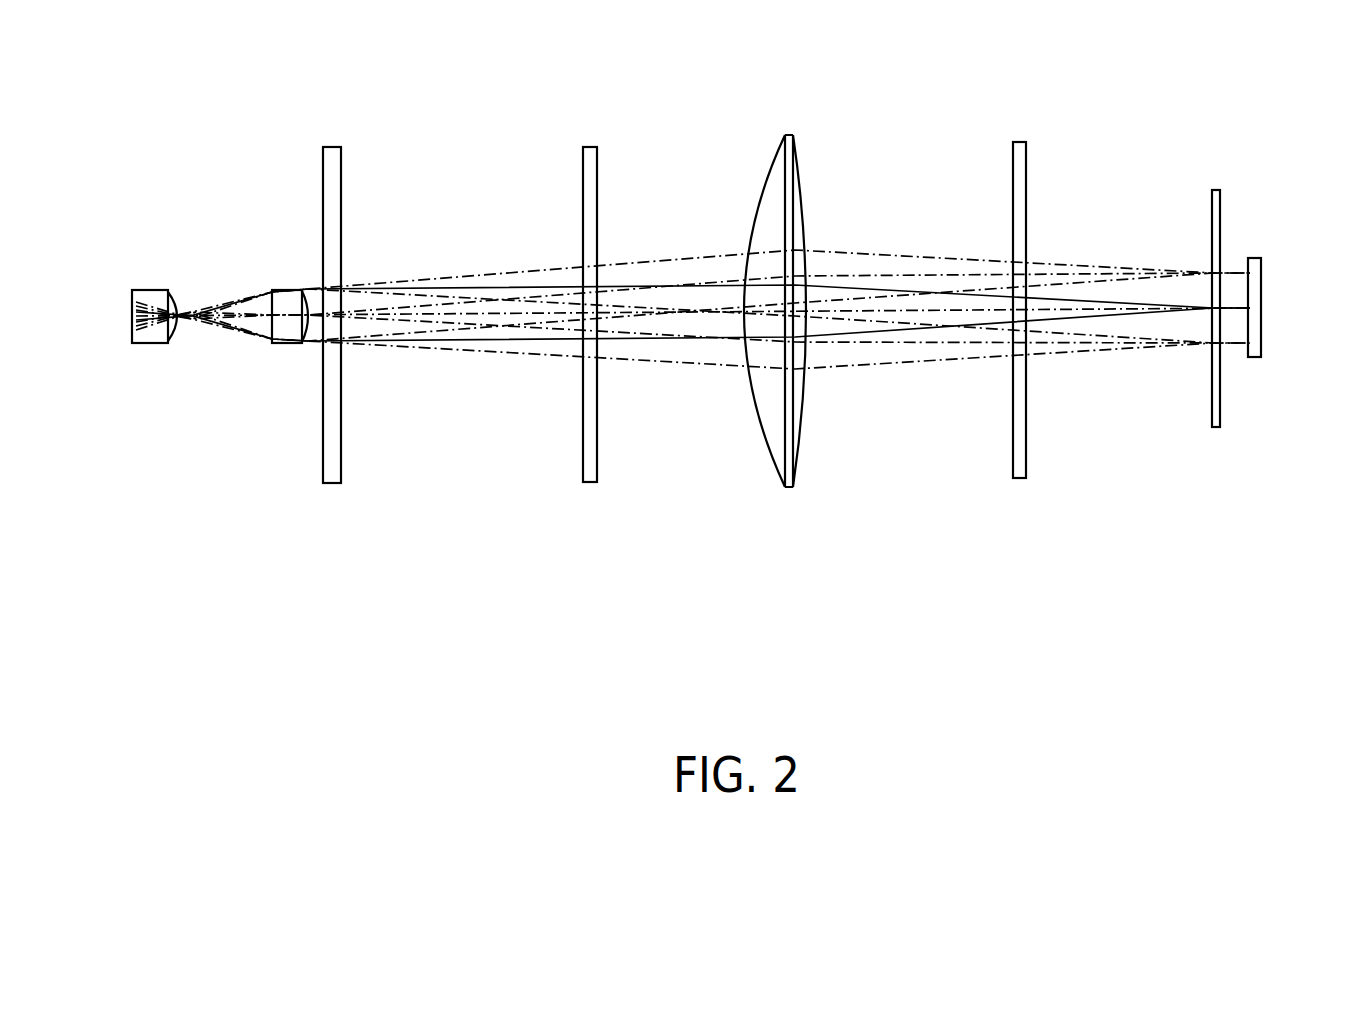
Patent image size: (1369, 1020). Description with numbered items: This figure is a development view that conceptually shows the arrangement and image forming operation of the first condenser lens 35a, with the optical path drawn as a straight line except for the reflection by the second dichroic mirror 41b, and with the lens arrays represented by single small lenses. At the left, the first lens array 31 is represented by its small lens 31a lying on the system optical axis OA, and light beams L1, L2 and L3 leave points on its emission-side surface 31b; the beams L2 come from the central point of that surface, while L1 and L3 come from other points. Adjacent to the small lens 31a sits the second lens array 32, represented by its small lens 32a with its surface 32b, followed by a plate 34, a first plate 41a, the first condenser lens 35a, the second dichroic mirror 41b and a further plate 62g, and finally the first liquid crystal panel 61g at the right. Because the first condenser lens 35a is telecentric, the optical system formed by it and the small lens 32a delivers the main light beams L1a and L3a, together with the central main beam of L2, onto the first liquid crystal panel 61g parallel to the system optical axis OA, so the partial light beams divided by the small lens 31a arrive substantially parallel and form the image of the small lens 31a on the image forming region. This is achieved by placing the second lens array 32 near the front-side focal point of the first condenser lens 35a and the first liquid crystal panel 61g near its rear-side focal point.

The first lens array 31 is at (127, 297).
The small lens 31a is at (150, 335).
The emission-side surface 31b is at (173, 297).
The second lens array 32 is at (259, 292).
The small lens 32a is at (292, 330).
The lens surface 32b is at (312, 290).
The plate 34 is at (322, 182).
The first plate 41a is at (583, 205).
The first condenser lens 35a is at (758, 197).
The second dichroic mirror 41b is at (1013, 183).
The plate 62g is at (1212, 237).
The first liquid crystal panel 61g is at (1260, 330).
The system optical axis OA is at (435, 315).
The light beams L1 is at (955, 260).
The main light beam L1a is at (715, 280).
The light beams L2 is at (1148, 302).
The light beams L3 is at (693, 367).
The main light beam L3a is at (897, 347).